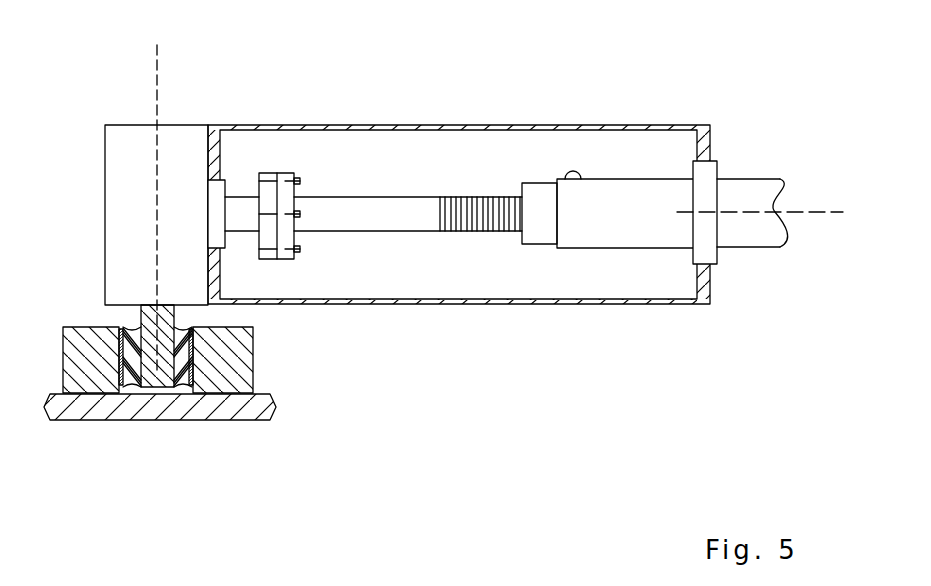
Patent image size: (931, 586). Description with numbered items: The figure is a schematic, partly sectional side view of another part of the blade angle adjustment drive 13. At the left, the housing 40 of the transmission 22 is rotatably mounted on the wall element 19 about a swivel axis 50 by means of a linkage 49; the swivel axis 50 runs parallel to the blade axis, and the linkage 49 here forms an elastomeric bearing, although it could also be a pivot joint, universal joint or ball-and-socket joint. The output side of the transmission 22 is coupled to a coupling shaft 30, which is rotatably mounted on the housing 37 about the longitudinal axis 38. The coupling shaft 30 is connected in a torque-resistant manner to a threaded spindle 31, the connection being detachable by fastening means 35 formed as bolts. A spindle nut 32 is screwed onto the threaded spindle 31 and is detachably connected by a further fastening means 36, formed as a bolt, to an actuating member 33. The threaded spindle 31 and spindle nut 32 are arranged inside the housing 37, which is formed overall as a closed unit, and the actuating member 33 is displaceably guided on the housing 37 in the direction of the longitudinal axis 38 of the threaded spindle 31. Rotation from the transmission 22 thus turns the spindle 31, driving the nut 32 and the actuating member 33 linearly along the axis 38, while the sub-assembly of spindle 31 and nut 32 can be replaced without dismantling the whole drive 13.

The blade angle adjustment drive 13 is at (686, 64).
The wall element 19 is at (235, 415).
The transmission 22 is at (192, 128).
The coupling shaft 30 is at (240, 207).
The threaded spindle 31 is at (433, 208).
The spindle nut 32 is at (537, 185).
The actuating member 33 is at (750, 182).
The fastening means 35 is at (300, 179).
The fastening means 36 is at (574, 178).
The housing 37 is at (659, 302).
The longitudinal axis 38 is at (816, 215).
The housing of the transmission 40 is at (105, 152).
The linkage 49 is at (73, 335).
The swivel axis 50 is at (157, 80).